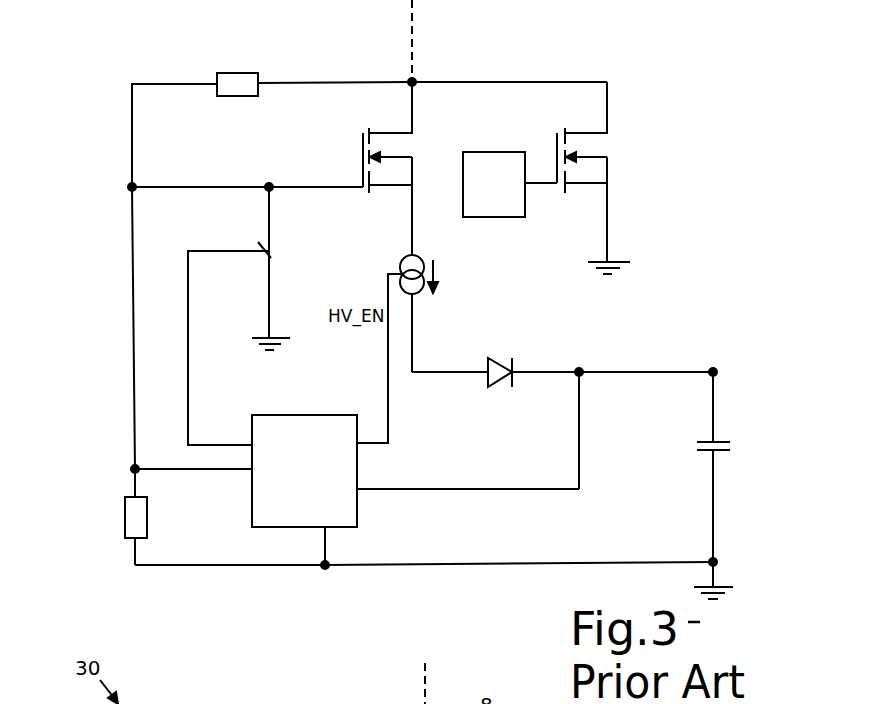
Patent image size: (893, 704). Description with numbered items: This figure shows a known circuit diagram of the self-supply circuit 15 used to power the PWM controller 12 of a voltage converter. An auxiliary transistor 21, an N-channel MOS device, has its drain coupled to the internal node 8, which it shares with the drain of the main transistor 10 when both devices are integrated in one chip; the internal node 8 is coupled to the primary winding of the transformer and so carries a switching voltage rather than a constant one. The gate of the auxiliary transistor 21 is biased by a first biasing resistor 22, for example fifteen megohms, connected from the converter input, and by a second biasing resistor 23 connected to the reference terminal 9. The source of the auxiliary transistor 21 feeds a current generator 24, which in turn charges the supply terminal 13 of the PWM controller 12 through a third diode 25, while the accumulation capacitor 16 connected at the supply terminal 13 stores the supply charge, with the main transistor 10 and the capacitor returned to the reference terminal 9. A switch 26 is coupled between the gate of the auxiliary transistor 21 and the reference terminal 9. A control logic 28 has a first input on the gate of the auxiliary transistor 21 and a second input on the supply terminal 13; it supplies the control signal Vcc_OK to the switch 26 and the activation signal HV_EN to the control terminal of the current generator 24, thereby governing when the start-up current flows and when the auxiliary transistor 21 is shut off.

The internal node 8 is at (412, 82).
The reference terminal 9 is at (252, 342).
The main transistor 10 is at (592, 155).
The PWM controller 12 is at (502, 208).
The supply terminal 13 is at (712, 370).
The self-supply circuit 15 is at (104, 152).
The accumulation capacitor 16 is at (720, 443).
The auxiliary transistor 21 is at (397, 157).
The first biasing resistor 22 is at (233, 80).
The second biasing resistor 23 is at (128, 517).
The current generator 24 is at (405, 256).
The third diode 25 is at (498, 357).
The switch 26 is at (272, 251).
The control logic 28 is at (335, 422).